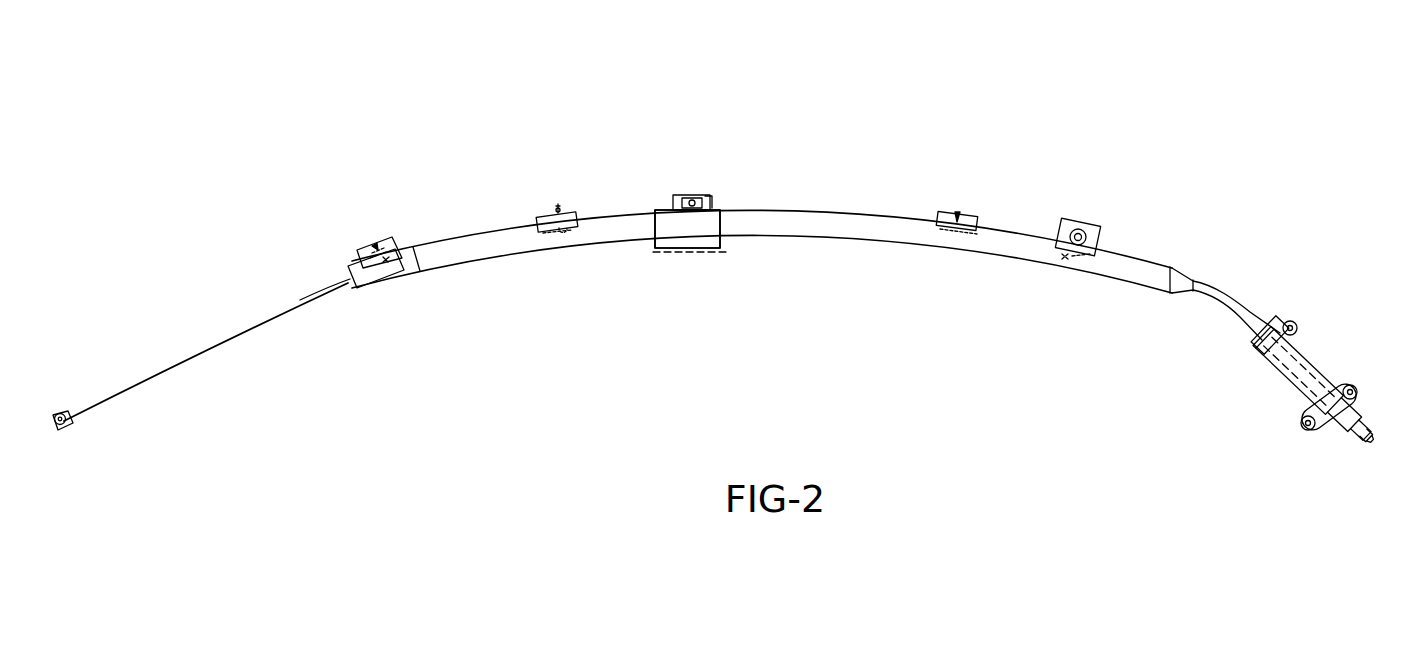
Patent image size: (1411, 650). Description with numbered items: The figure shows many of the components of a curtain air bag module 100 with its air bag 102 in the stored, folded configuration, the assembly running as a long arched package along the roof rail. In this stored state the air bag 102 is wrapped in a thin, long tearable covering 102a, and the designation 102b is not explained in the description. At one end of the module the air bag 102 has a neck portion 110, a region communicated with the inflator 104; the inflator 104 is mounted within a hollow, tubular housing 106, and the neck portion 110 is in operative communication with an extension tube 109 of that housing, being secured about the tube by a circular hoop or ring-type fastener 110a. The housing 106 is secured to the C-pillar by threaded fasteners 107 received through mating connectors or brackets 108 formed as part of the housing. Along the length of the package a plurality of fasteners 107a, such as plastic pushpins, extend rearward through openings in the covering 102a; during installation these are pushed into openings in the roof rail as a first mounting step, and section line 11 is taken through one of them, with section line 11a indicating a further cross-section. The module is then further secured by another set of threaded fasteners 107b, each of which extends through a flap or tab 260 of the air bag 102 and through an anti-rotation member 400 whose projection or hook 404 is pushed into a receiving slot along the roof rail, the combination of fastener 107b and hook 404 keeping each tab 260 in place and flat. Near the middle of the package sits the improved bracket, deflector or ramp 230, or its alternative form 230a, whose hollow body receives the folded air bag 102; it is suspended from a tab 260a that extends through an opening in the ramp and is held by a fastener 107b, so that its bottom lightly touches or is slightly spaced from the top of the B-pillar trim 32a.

The air bag module 100 is at (483, 193).
The air bag 102 is at (453, 242).
The covering 102a is at (472, 262).
The rail lower surface 102b is at (395, 250).
The inflator 104 is at (1307, 377).
The housing 106 is at (1287, 378).
The threaded fasteners 107 is at (1292, 322).
The fasteners 107a is at (372, 270).
The threaded fasteners 107b is at (372, 247).
The brackets 108 is at (1282, 323).
The extension tube 109 is at (1220, 297).
The neck portion 110 is at (1178, 275).
The ring-type fastener 110a is at (1197, 280).
The section line 11 is at (685, 388).
The section line 11a is at (957, 390).
The ramp 230 is at (703, 228).
The ramp 230a is at (687, 229).
The tabs 260 is at (355, 253).
The tab 260a is at (712, 195).
The B-pillar trim 32a is at (727, 253).
The anti-rotation member 400 is at (378, 243).
The hook 404 is at (373, 248).